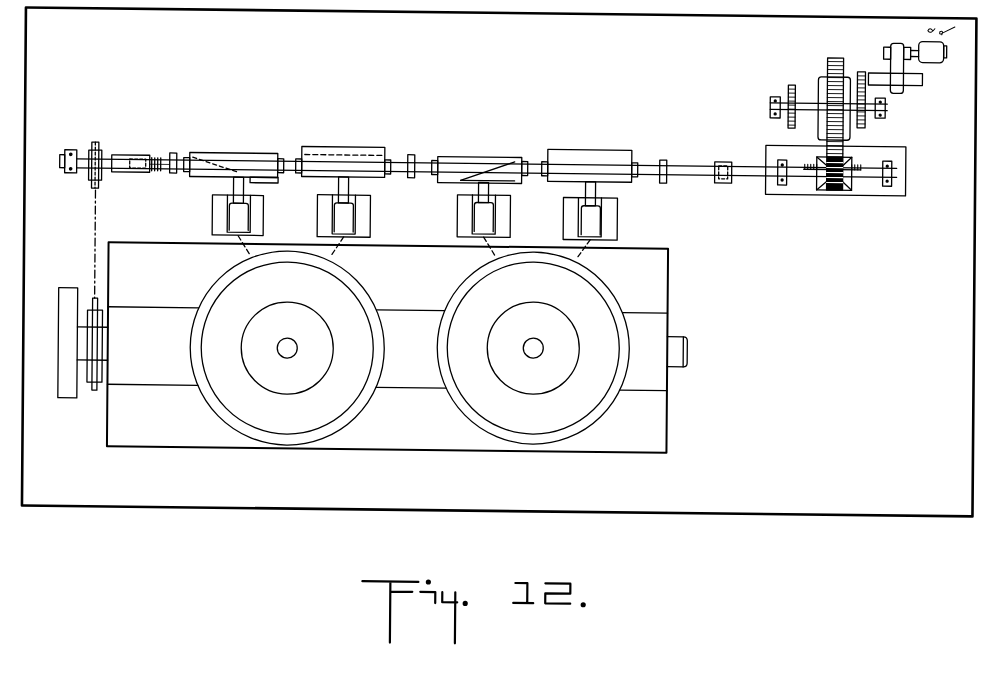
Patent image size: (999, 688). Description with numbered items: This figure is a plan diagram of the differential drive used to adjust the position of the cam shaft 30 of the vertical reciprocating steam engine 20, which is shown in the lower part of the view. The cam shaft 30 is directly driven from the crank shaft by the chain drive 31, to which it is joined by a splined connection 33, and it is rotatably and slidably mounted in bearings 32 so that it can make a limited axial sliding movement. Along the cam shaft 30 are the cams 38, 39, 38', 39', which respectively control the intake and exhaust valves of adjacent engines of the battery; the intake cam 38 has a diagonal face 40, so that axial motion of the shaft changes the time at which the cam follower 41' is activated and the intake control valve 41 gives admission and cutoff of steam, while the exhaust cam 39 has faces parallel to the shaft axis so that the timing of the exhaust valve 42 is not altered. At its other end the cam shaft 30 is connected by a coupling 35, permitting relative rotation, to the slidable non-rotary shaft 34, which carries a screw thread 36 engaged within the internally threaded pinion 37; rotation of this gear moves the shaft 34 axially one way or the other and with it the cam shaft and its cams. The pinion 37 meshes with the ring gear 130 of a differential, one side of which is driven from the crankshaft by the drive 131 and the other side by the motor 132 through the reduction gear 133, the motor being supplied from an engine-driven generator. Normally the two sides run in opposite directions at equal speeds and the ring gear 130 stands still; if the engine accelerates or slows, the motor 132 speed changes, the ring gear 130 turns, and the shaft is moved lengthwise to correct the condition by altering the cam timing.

The vertical reciprocating steam engine 20 is at (352, 398).
The cam shaft 30 is at (160, 156).
The chain drive 31 is at (97, 140).
The bearings 32 is at (176, 151).
The splined connection 33 is at (133, 152).
The slidable non-rotary shaft 34 is at (790, 177).
The coupling 35 is at (723, 153).
The screw thread 36 is at (810, 172).
The pinion 37 is at (840, 182).
The cam 38 is at (234, 139).
The cam 38' is at (480, 146).
The cam 39 is at (344, 143).
The cam 39' is at (590, 145).
The diagonal face 40 is at (276, 180).
The intake control valve 41 is at (217, 224).
The cam follower 41' is at (210, 203).
The exhaust valve 42 is at (372, 212).
The ring gear 130 is at (836, 48).
The drive 131 is at (791, 76).
The motor 132 is at (931, 52).
The reduction gear 133 is at (897, 33).